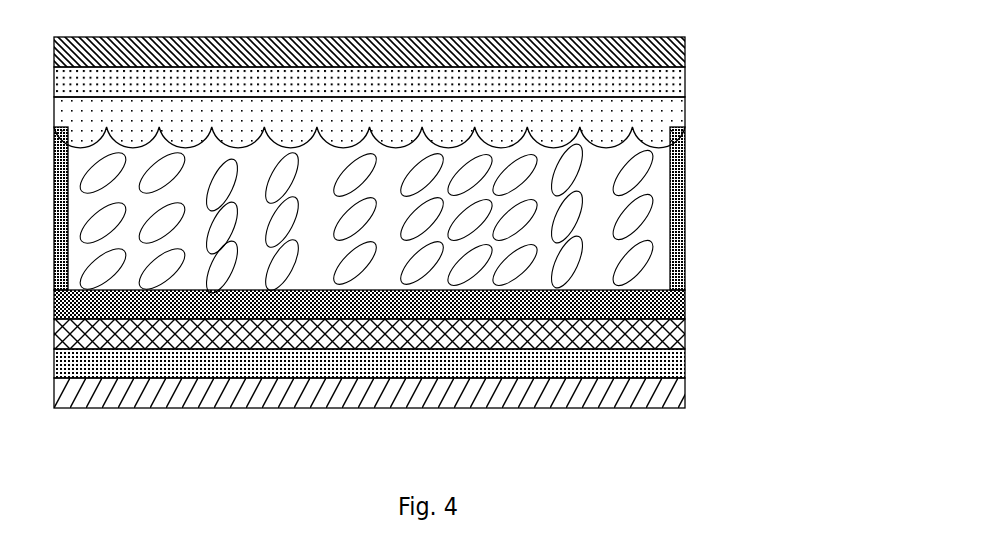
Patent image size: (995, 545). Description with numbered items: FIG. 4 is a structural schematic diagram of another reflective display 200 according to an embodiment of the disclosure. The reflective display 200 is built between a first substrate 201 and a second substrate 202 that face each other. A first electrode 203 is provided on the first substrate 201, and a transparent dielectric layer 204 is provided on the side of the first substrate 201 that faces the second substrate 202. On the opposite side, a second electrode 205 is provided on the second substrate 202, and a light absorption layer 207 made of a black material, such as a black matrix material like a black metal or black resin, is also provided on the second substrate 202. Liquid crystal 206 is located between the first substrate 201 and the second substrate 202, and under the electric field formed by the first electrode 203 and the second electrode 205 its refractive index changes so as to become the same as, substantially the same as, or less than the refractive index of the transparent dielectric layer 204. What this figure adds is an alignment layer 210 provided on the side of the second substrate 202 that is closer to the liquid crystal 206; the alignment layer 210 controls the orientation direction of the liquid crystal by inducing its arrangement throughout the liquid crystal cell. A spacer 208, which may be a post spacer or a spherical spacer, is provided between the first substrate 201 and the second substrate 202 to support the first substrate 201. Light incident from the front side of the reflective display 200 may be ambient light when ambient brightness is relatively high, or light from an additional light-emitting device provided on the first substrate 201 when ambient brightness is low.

The reflective display 200 is at (415, 235).
The first substrate 201 is at (672, 53).
The second substrate 202 is at (650, 398).
The first electrode 203 is at (655, 90).
The transparent dielectric layer 204 is at (655, 125).
The second electrode 205 is at (652, 357).
The liquid crystal 206 is at (637, 218).
The light absorption layer 207 is at (685, 330).
The spacer 208 is at (685, 270).
The alignment layer 210 is at (685, 299).